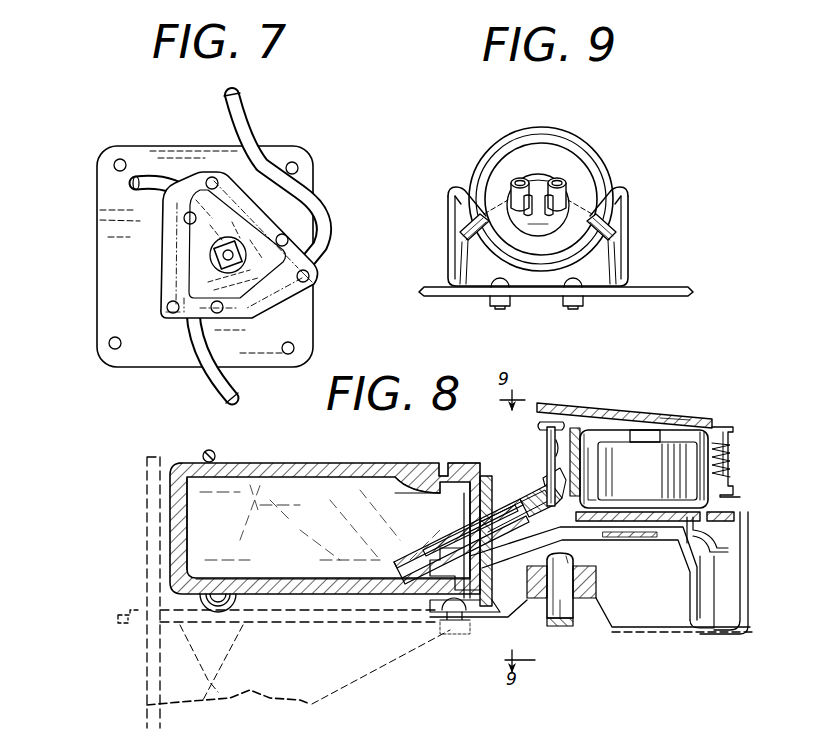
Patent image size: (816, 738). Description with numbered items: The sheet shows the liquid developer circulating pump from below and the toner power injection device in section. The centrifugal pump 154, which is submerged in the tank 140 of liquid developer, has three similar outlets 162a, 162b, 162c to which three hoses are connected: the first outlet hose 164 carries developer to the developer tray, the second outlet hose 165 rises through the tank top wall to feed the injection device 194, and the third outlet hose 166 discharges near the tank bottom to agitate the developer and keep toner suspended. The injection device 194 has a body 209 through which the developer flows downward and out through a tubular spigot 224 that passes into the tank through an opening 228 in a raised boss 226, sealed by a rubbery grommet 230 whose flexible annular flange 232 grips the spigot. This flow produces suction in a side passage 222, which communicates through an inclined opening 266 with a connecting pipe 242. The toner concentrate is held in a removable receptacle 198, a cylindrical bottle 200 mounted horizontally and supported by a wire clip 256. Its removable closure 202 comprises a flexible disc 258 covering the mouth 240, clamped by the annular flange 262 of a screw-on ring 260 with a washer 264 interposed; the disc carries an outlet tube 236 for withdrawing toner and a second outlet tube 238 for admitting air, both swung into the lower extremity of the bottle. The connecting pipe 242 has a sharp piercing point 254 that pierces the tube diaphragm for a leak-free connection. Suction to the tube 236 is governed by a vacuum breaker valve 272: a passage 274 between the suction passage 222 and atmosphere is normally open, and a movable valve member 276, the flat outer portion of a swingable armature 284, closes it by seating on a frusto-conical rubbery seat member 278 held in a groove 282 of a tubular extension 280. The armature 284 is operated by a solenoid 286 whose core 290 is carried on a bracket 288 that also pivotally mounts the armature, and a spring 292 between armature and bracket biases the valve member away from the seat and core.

In FIG. 8, the tank 140 is at (120, 605).
In FIG. 7, the pump 154 is at (160, 274).
In FIG. 7, the outlet 162a is at (193, 178).
In FIG. 7, the outlet 162b is at (302, 288).
In FIG. 7, the outlet 162c is at (182, 320).
In FIG. 7, the first outlet hose 164 is at (130, 192).
In FIG. 7, the second outlet hose 165 is at (244, 132).
In FIG. 7, the third outlet hose 166 is at (205, 355).
In FIG. 8, the power injection device 194 is at (96, 538).
In FIG. 9, the removable receptacle 198 is at (568, 124).
In FIG. 8, the removable receptacle 198 is at (176, 452).
In FIG. 8, the bottle 200 is at (262, 463).
In FIG. 9, the removable closure 202 is at (484, 144).
In FIG. 8, the removable closure 202 is at (458, 462).
In FIG. 8, the body 209 is at (732, 514).
In FIG. 8, the side passage 222 is at (596, 462).
In FIG. 8, the tubular spigot 224 is at (575, 630).
In FIG. 8, the raised boss 226 is at (600, 590).
In FIG. 8, the opening 228 is at (598, 574).
In FIG. 8, the sealing grommet 230 is at (604, 628).
In FIG. 8, the annular flange 232 is at (557, 624).
In FIG. 9, the outlet tube 236 is at (524, 178).
In FIG. 8, the outlet tube 236 is at (422, 548).
In FIG. 9, the second outlet tube 238 is at (561, 178).
In FIG. 8, the mouth 240 is at (394, 482).
In FIG. 8, the connecting pipe 242 is at (490, 566).
In FIG. 8, the piercing point 254 is at (452, 547).
In FIG. 9, the wire clip 256 is at (630, 226).
In FIG. 8, the wire clip 256 is at (209, 450).
In FIG. 8, the flexible disc 258 is at (486, 492).
In FIG. 8, the ring 260 is at (440, 468).
In FIG. 8, the annular flange 262 is at (470, 616).
In FIG. 8, the washer 264 is at (470, 478).
In FIG. 8, the inclined opening 266 is at (548, 486).
In FIG. 8, the vacuum breaker valve 272 is at (572, 392).
In FIG. 8, the passage 274 is at (575, 428).
In FIG. 8, the movable valve member 276 is at (558, 404).
In FIG. 8, the seat member 278 is at (541, 410).
In FIG. 8, the tubular extension 280 is at (598, 448).
In FIG. 8, the groove 282 is at (604, 432).
In FIG. 8, the swingable armature 284 is at (660, 432).
In FIG. 8, the solenoid 286 is at (670, 458).
In FIG. 8, the bracket 288 is at (734, 429).
In FIG. 8, the core 290 is at (680, 420).
In FIG. 8, the spring 292 is at (732, 452).